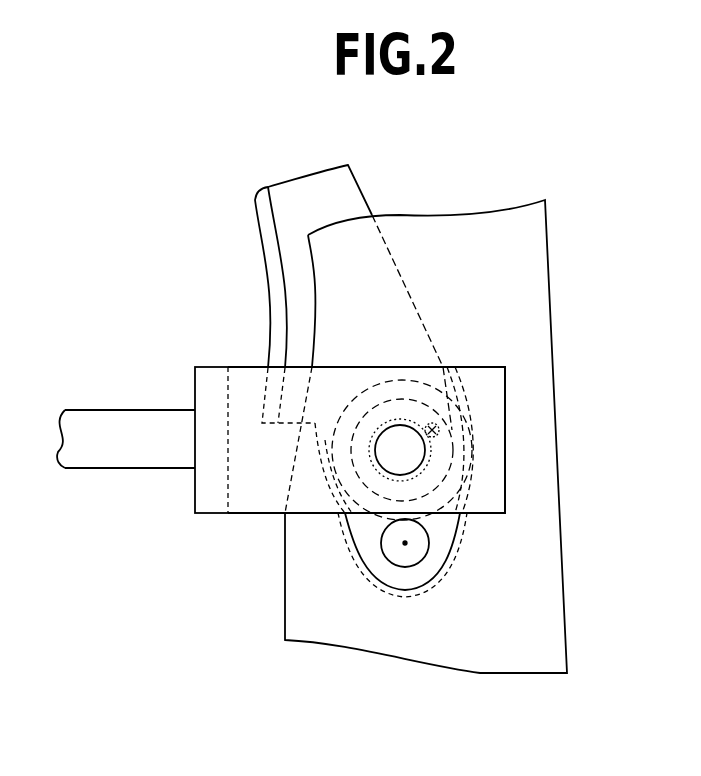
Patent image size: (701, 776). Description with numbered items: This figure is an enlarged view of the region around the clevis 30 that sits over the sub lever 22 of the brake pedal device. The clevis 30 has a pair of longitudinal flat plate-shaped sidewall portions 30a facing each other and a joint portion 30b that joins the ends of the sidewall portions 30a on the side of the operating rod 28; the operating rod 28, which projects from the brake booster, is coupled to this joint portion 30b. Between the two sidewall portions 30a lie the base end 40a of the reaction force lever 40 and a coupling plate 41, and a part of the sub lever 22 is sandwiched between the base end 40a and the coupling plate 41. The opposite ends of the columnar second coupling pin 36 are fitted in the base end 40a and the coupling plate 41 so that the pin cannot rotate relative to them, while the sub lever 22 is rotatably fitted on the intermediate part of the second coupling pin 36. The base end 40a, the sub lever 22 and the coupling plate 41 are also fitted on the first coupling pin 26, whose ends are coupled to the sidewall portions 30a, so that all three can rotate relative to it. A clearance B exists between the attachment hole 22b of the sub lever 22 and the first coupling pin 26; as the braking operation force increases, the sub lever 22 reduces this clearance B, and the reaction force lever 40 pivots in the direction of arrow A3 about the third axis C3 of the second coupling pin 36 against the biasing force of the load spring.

The sub lever 22 is at (483, 208).
The attachment hole 22b is at (452, 512).
The first coupling pin 26 is at (397, 455).
The operating rod 28 is at (137, 428).
The clevis 30 is at (222, 352).
The sidewall portions 30a is at (490, 421).
The joint portion 30b is at (212, 497).
The second coupling pin 36 is at (412, 558).
The reaction force lever 40 is at (277, 178).
The base end 40a is at (385, 568).
The coupling plate 41 is at (443, 577).
The clearance B is at (437, 425).
The third axis C3 is at (402, 543).
The arrow A3 is at (368, 138).